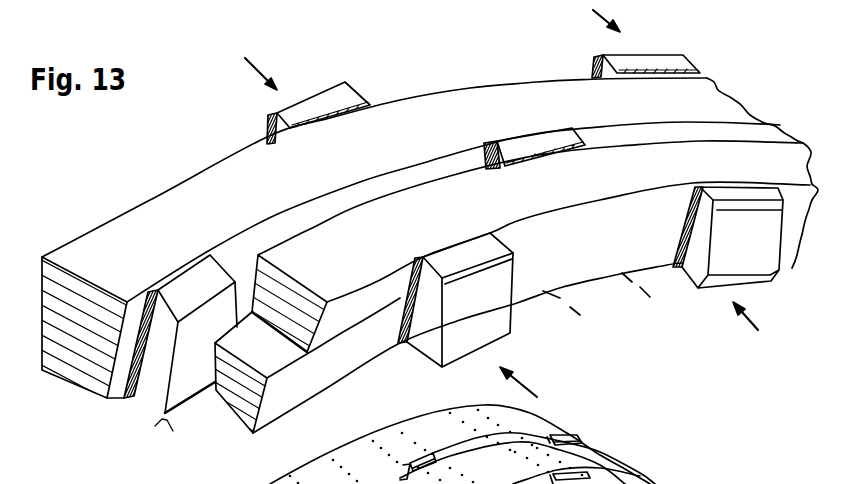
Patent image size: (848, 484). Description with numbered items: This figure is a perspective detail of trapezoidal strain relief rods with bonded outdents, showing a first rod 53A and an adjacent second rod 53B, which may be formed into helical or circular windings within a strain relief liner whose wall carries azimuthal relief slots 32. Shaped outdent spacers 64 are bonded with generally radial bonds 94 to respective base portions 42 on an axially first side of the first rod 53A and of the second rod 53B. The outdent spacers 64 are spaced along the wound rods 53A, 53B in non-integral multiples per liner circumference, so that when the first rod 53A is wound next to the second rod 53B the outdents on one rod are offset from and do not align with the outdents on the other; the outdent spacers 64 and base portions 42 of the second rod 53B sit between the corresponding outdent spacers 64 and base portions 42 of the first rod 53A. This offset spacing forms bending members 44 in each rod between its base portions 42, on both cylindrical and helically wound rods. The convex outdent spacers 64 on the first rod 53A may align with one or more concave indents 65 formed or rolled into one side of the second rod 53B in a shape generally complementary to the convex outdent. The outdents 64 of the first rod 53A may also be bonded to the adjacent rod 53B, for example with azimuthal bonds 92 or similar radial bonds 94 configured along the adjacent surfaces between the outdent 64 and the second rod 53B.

The azimuthal relief slots 32 is at (321, 223).
The base portions 42 is at (100, 211).
The bending members 44 is at (56, 235).
The first rod 53A is at (125, 423).
The second rod 53B is at (164, 450).
The outdent spacers 64 is at (165, 401).
The concave indents 65 is at (172, 433).
The azimuthal bonds 92 is at (214, 391).
The radial bonds 94 is at (128, 395).